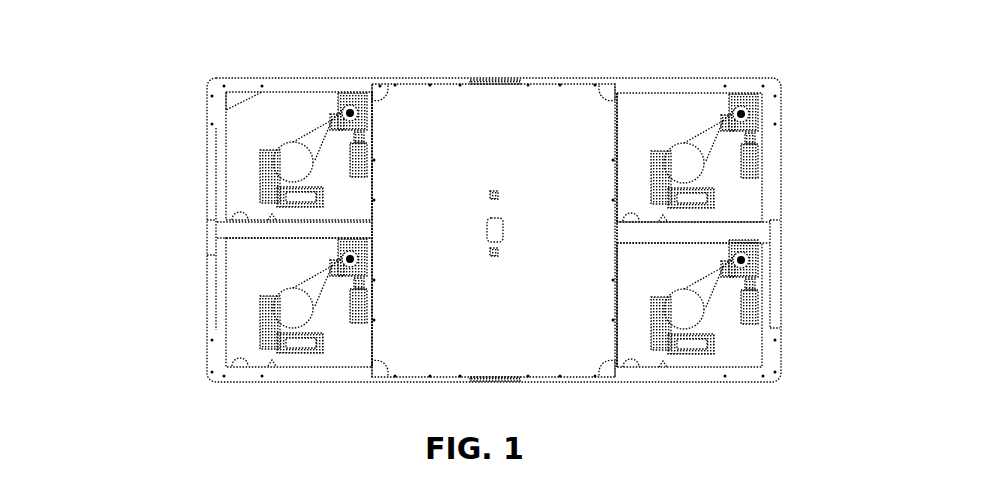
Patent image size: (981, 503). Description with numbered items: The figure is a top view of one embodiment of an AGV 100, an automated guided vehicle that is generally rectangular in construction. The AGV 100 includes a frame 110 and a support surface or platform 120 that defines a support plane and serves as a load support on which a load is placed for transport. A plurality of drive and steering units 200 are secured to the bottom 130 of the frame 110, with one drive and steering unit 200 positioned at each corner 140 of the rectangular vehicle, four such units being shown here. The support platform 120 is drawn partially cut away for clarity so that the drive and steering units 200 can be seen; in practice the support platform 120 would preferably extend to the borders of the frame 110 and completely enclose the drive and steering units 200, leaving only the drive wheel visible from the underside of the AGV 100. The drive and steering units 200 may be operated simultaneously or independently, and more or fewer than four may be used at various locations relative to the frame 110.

The AGV 100 is at (150, 61).
The frame 110 is at (782, 188).
The support platform 120 is at (432, 98).
The bottom 130 is at (235, 331).
The corner 140 is at (748, 355).
The drive and steering unit 200 is at (242, 163).